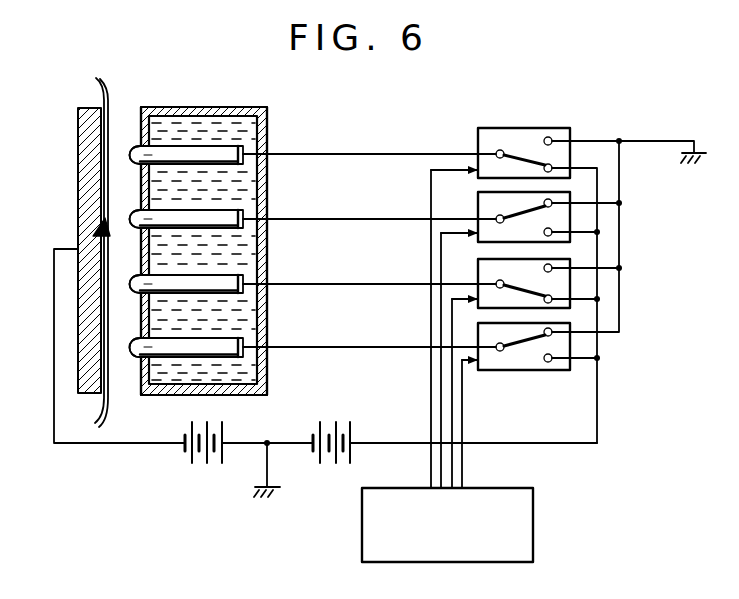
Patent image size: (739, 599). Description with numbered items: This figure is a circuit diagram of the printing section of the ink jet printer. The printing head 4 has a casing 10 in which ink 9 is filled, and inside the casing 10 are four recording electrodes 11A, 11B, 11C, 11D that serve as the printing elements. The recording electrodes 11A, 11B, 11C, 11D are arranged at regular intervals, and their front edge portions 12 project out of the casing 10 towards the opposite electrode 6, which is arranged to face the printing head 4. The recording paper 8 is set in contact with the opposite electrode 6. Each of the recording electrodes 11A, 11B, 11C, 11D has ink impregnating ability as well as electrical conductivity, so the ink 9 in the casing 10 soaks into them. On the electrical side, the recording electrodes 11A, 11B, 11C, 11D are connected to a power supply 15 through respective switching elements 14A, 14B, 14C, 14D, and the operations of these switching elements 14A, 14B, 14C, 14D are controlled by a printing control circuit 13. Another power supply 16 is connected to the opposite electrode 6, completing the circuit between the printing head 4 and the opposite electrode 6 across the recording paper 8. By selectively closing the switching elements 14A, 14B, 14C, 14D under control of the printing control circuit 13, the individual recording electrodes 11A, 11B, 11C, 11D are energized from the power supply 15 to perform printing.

The printing head 4 is at (215, 104).
The opposite electrode 6 is at (78, 131).
The recording paper 8 is at (101, 91).
The ink 9 is at (262, 121).
The casing 10 is at (172, 114).
The recording electrode 11A is at (247, 162).
The recording electrode 11B is at (247, 226).
The recording electrode 11C is at (247, 291).
The recording electrode 11D is at (247, 355).
The front edge portions 12 is at (131, 212).
The printing control circuit 13 is at (517, 512).
The switching element 14A is at (523, 137).
The switching element 14B is at (492, 203).
The switching element 14C is at (492, 273).
The switching element 14D is at (529, 365).
The power supply 15 is at (327, 463).
The power supply 16 is at (200, 460).